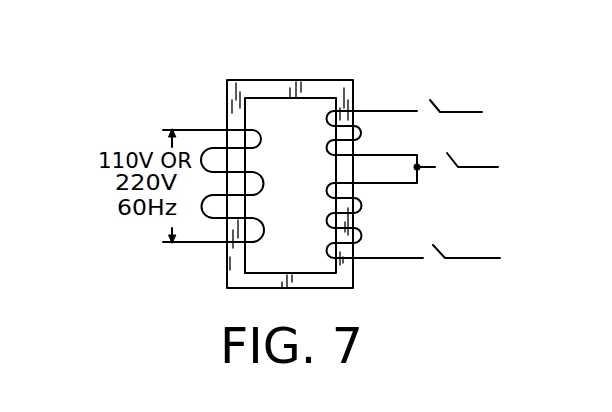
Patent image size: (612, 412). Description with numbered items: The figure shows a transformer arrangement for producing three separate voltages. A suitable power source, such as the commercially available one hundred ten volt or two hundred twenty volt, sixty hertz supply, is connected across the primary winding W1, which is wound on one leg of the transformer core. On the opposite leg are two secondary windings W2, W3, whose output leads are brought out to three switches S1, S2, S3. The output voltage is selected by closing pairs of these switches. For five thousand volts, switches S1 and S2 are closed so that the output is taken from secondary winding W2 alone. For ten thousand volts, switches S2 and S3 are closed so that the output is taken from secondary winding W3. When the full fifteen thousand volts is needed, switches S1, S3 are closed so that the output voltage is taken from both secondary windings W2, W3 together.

The primary winding W1 is at (260, 133).
The secondary winding W2 is at (327, 120).
The secondary winding W3 is at (327, 250).
The switch S1 is at (433, 98).
The switch S2 is at (455, 152).
The switch S3 is at (443, 244).